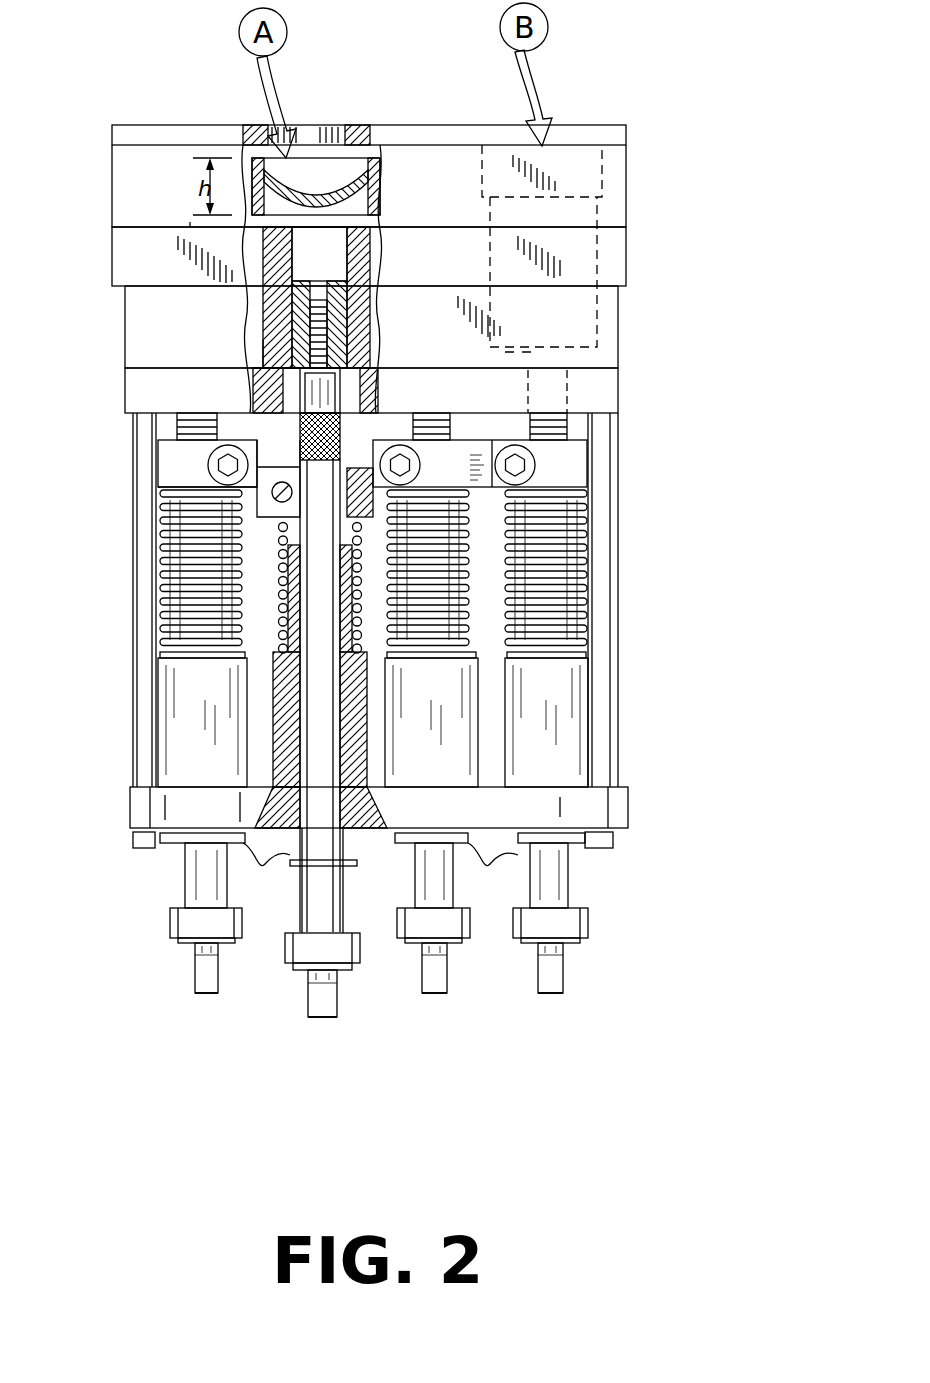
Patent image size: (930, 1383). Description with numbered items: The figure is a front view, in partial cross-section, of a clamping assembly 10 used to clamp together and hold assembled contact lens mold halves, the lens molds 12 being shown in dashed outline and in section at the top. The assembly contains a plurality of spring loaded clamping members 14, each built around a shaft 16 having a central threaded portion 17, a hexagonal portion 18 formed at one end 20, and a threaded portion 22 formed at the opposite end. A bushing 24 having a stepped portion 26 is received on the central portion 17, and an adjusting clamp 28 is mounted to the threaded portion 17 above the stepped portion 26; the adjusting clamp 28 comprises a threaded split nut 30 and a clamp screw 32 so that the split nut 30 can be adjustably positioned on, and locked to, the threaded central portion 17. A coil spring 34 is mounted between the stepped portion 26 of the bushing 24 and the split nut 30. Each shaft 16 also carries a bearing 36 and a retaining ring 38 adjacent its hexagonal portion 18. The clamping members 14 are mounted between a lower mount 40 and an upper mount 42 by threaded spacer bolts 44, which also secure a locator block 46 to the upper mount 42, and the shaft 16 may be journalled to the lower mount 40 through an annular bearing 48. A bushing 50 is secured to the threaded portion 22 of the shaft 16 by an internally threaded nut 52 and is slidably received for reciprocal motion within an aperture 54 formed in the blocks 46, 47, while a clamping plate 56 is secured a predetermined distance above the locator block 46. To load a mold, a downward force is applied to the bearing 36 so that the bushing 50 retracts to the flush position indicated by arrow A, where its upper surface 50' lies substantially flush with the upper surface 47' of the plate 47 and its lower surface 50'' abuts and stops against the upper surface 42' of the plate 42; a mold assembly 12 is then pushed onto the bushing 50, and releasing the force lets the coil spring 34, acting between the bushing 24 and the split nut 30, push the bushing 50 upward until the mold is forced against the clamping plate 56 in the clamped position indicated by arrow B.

The clamping assembly 10 is at (692, 308).
The lens mold 12 is at (318, 148).
The spring loaded clamping member 14 is at (322, 1055).
The shaft 16 is at (185, 882).
The central threaded portion 17 is at (197, 413).
The hexagonal portion 18 is at (196, 976).
The end 20 is at (320, 1017).
The threaded portion 22 is at (342, 304).
The bushing 24 is at (275, 723).
The stepped portion 26 is at (224, 643).
The adjusting clamp 28 is at (178, 460).
The threaded split nut 30 is at (172, 477).
The clamp screw 32 is at (280, 483).
The coil spring 34 is at (160, 568).
The bearing 36 is at (170, 924).
The retaining ring 38 is at (373, 865).
The lower mount 40 is at (618, 808).
The upper mount 42 is at (401, 390).
The upper surface of plate 42 42' is at (182, 357).
The threaded spacer bolt 44 is at (133, 678).
The locator block 46 is at (619, 334).
The plate 47 is at (333, 256).
The upper surface of plate 47 47' is at (335, 186).
The annular bearing 48 is at (357, 863).
The bushing 50 is at (537, 250).
The upper surface of bushing 50 50' is at (470, 178).
The lower surface of bushing 50 50'' is at (210, 341).
The internally threaded nut 52 is at (304, 282).
The aperture 54 is at (277, 268).
The clamping plate 56 is at (203, 126).